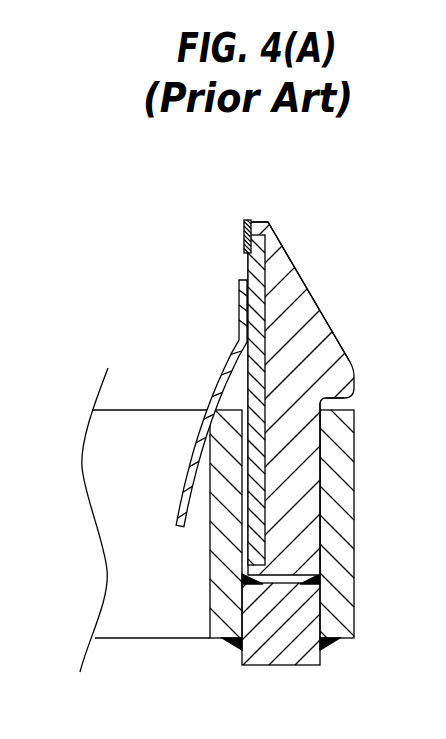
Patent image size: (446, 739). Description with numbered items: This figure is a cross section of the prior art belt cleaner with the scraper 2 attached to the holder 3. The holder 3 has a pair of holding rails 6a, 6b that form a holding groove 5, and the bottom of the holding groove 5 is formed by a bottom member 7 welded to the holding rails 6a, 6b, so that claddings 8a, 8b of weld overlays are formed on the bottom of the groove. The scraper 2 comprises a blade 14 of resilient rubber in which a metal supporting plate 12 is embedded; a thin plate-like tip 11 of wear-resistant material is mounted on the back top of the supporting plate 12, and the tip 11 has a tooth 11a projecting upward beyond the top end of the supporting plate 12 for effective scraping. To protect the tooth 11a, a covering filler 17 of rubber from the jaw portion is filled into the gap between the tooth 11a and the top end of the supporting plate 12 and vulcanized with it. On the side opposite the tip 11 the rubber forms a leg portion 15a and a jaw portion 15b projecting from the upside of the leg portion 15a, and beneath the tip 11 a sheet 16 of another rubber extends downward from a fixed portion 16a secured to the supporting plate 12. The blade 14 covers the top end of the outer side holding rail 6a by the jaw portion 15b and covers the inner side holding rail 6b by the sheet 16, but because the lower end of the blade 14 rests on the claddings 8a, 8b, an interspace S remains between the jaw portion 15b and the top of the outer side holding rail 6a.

The scraper 2 is at (223, 384).
The blade 14 is at (223, 384).
The holder 3 is at (217, 652).
The holding groove 5 is at (275, 524).
The outer side holding rail 6a is at (355, 543).
The inner side holding rail 6b is at (209, 553).
The bottom member 7 is at (283, 666).
The cladding 8a is at (322, 578).
The cladding 8b is at (232, 580).
The tip 11 is at (215, 235).
The tooth 11a is at (244, 223).
The supporting plate 12 is at (247, 371).
The leg portion 15a is at (303, 470).
The jaw portion 15b is at (303, 311).
The sheet 16 is at (187, 403).
The fixed portion 16a is at (239, 297).
The covering filler 17 is at (256, 222).
The interspace S is at (338, 405).